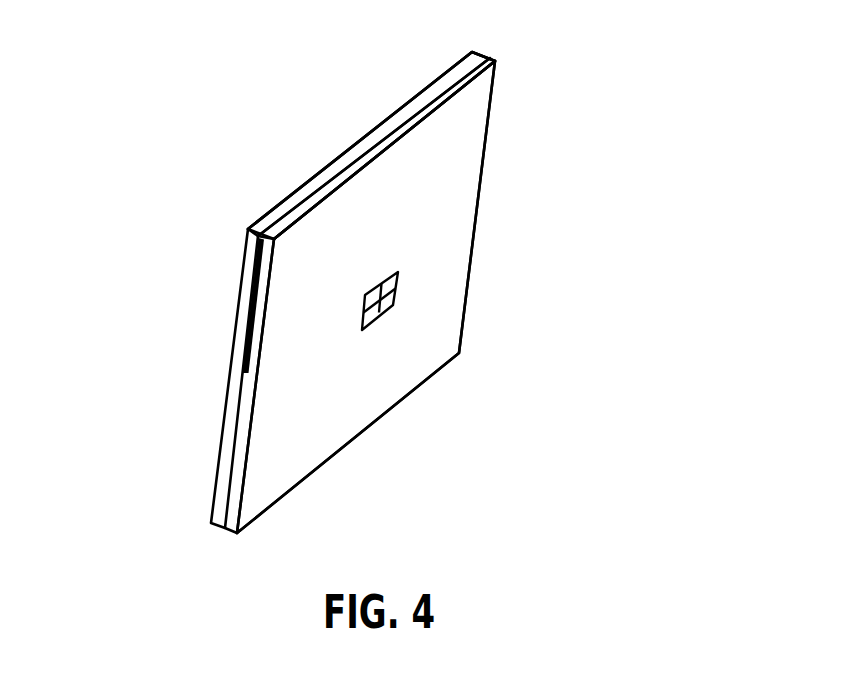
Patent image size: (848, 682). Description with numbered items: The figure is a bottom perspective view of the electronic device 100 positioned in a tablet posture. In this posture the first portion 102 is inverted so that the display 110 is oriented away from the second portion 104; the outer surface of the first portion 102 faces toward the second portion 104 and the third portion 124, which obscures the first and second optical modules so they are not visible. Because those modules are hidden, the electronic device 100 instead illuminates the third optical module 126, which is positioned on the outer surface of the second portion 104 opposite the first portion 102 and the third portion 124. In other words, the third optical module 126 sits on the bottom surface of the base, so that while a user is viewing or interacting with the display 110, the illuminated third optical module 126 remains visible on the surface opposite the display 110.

The electronic device 100 is at (508, 92).
The first portion 102 is at (347, 148).
The second portion 104 is at (485, 162).
The display 110 is at (416, 78).
The third portion 124 is at (253, 293).
The third optical module 126 is at (398, 285).